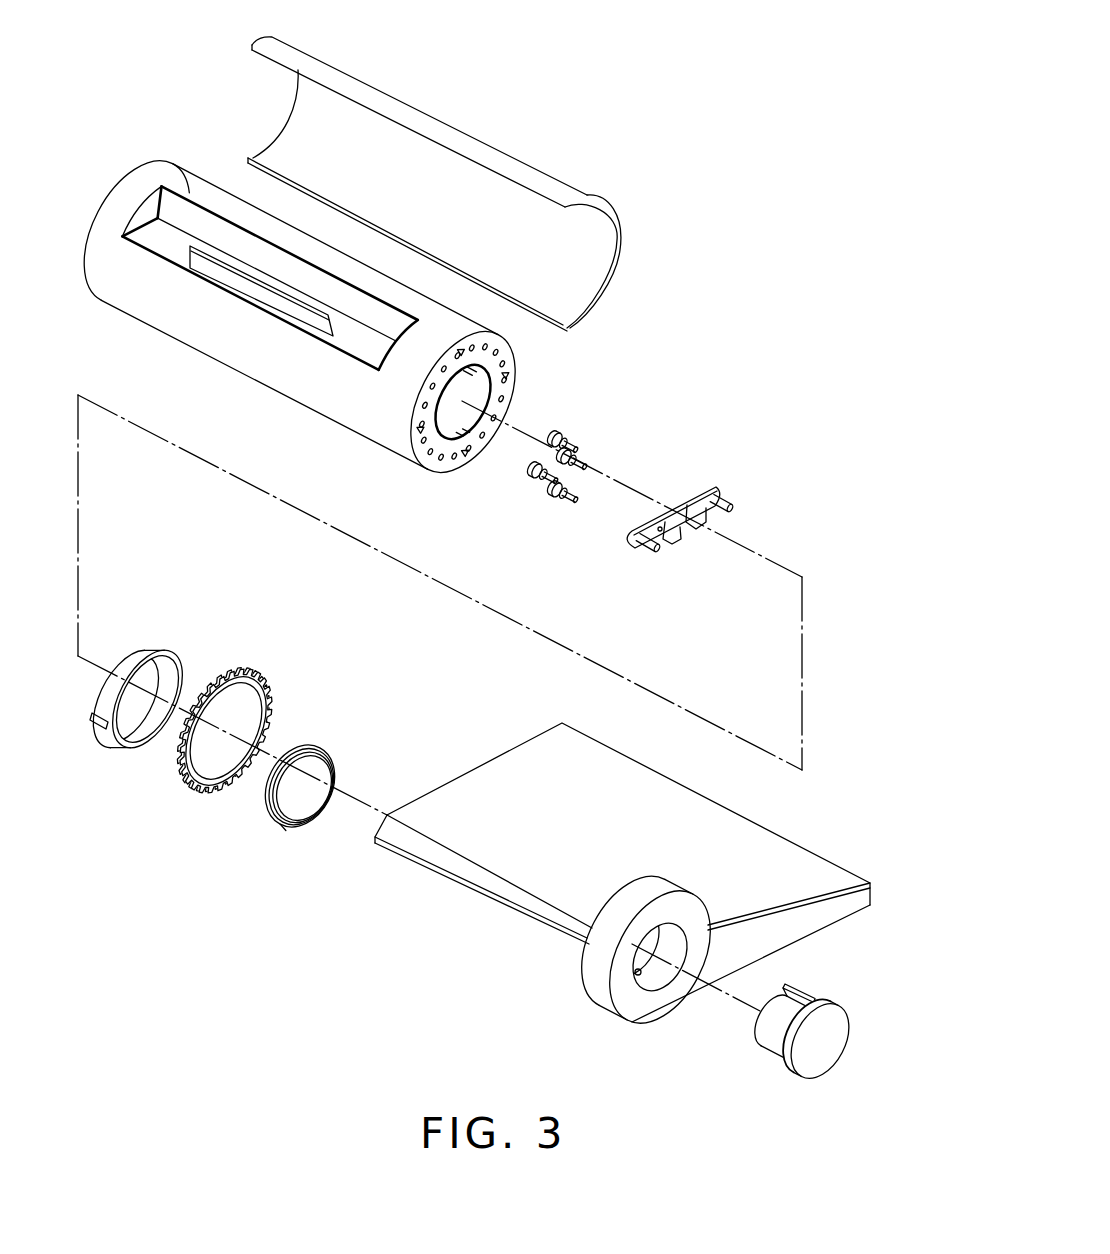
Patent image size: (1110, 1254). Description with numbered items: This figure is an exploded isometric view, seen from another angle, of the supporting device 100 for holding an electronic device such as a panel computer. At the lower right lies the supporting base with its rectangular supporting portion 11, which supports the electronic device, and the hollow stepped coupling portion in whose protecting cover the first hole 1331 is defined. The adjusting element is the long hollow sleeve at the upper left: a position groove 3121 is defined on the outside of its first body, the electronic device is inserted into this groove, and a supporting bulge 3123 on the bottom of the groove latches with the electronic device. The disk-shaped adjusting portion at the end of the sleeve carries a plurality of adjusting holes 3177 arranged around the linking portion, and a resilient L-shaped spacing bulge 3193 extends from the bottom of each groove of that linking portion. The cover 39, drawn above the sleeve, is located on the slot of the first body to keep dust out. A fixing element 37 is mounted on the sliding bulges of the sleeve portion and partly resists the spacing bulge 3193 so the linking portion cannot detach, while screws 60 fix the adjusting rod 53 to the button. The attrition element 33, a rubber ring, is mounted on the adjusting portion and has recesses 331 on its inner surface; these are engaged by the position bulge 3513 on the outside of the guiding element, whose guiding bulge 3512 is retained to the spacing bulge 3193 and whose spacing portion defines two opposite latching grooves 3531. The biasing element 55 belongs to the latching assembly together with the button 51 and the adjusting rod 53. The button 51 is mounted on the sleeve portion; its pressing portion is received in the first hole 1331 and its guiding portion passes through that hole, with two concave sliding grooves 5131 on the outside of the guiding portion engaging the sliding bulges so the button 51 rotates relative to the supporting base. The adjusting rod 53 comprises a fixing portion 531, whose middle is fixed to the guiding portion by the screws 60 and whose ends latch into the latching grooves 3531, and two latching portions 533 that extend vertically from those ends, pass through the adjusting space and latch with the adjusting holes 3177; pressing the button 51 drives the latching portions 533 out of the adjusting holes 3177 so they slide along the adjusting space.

The supporting device 100 is at (647, 62).
The cover 39 is at (462, 130).
The position groove 3121 is at (367, 347).
The supporting bulge 3123 is at (230, 272).
The adjusting holes 3177 is at (504, 372).
The spacing bulge 3193 is at (455, 443).
The fixing element 37 is at (537, 480).
The screws 60 is at (561, 500).
The adjusting rod 53 is at (770, 433).
The latching portions 533 is at (697, 493).
The fixing portion 531 is at (727, 500).
The guiding bulge 3512 is at (180, 680).
The position bulge 3513 is at (147, 747).
The latching grooves 3531 is at (95, 718).
The attrition element 33 is at (270, 686).
The recesses 331 is at (243, 786).
The biasing element 55 is at (307, 752).
The supporting portion 11 is at (530, 763).
The first hole 1331 is at (650, 990).
The button 51 is at (820, 1047).
The sliding grooves 5131 is at (790, 994).